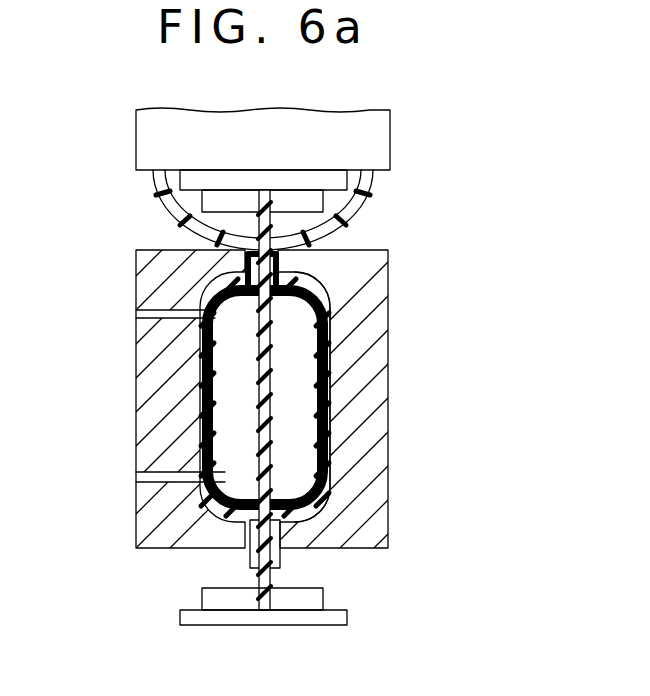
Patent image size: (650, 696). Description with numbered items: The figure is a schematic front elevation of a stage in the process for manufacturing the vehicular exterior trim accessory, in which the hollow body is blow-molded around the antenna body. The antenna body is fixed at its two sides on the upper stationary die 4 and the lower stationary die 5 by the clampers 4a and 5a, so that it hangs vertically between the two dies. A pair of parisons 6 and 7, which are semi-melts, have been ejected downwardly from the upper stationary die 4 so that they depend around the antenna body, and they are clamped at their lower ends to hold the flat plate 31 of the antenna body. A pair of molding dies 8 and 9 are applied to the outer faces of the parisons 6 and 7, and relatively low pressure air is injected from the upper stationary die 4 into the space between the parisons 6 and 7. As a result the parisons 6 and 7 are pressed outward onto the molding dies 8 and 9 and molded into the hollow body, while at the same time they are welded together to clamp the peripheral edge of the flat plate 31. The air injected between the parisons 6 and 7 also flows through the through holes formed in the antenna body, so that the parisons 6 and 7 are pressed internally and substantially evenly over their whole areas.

The upper stationary die 4 is at (375, 146).
The clamper 4a is at (316, 203).
The lower stationary die 5 is at (187, 615).
The clamper 5a is at (316, 601).
The parison 6 is at (213, 437).
The parison 7 is at (330, 303).
The molding die 8 is at (150, 370).
The molding die 9 is at (380, 397).
The flat plate 31 is at (270, 458).